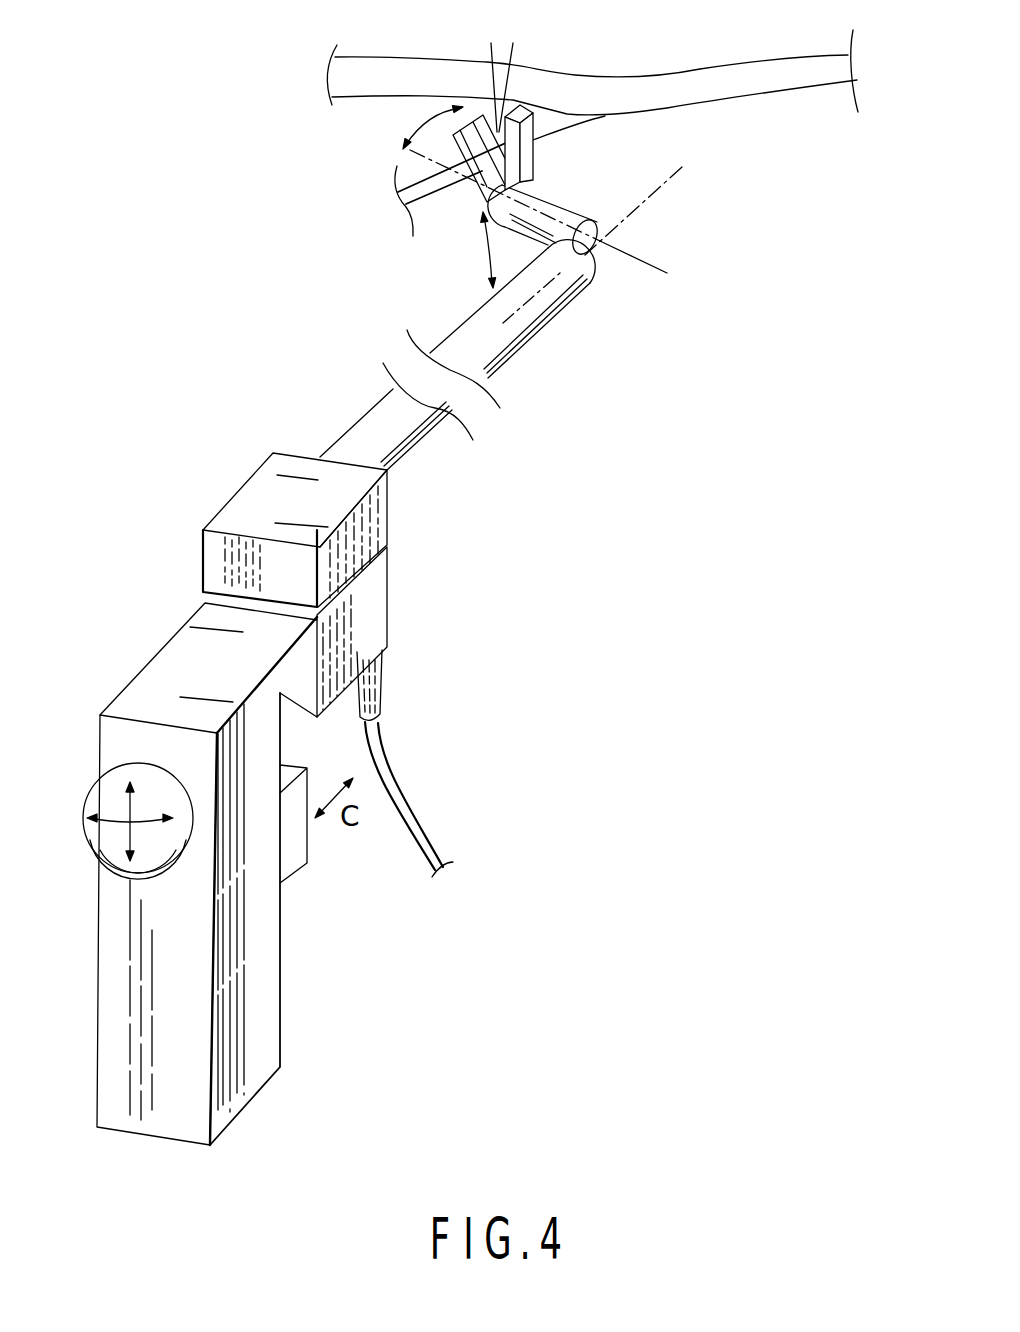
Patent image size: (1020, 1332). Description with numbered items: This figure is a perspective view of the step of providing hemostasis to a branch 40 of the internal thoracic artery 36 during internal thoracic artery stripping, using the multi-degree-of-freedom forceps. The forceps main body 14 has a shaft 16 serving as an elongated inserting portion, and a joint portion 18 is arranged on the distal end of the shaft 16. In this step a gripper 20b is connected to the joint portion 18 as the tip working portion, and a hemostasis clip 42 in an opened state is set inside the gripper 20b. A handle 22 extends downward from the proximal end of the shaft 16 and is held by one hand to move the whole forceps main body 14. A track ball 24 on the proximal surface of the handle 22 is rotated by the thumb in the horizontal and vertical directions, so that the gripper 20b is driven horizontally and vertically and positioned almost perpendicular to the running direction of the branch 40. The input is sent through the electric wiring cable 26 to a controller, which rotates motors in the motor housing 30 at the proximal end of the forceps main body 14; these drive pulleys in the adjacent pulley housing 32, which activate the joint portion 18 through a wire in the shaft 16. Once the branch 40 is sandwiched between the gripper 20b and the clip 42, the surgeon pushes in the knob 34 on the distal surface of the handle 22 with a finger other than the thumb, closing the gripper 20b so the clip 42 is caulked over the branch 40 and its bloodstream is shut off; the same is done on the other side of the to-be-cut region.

The forceps main body 14 is at (612, 584).
The shaft 16 is at (527, 352).
The joint portion 18 is at (567, 200).
The gripper 20b is at (548, 167).
The handle 22 is at (142, 1127).
The track ball 24 is at (100, 860).
The electric wiring cable 26 is at (398, 789).
The motor housing 30 is at (382, 603).
The pulley housing 32 is at (240, 492).
The knob 34 is at (290, 880).
The internal thoracic artery 36 is at (752, 70).
The branch 40 is at (553, 137).
The hemostasis clip 42 is at (514, 71).